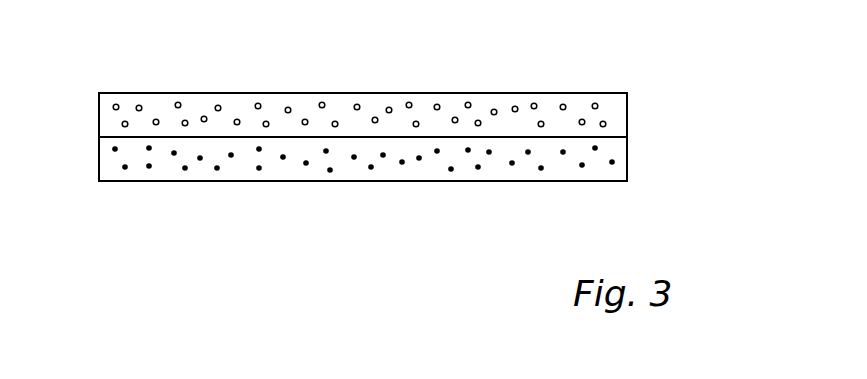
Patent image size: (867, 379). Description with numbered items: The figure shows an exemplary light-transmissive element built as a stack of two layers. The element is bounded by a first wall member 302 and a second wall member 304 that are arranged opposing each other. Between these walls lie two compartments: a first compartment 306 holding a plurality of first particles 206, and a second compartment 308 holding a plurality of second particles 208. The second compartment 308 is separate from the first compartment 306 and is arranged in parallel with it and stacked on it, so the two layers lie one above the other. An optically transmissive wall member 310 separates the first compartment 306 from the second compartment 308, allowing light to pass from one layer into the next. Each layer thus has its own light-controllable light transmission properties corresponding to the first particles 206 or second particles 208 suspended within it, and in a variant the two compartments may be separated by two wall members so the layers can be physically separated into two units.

The first wall member 302 is at (173, 93).
The second wall member 304 is at (212, 181).
The first particles 206 is at (563, 104).
The second particles 208 is at (582, 168).
The first compartment 306 is at (627, 116).
The second compartment 308 is at (627, 155).
The optically transmissive wall member 310 is at (133, 137).